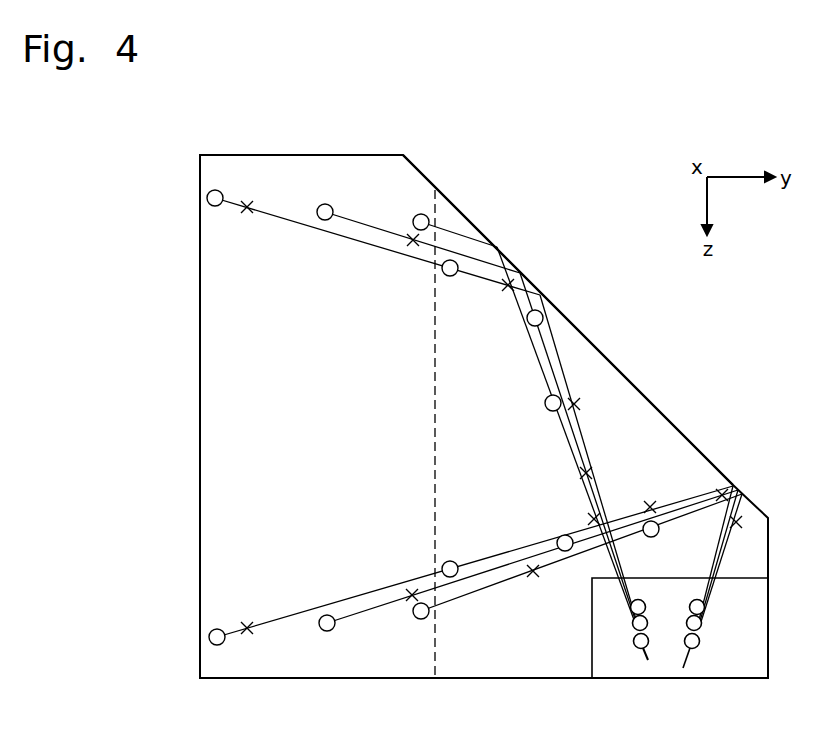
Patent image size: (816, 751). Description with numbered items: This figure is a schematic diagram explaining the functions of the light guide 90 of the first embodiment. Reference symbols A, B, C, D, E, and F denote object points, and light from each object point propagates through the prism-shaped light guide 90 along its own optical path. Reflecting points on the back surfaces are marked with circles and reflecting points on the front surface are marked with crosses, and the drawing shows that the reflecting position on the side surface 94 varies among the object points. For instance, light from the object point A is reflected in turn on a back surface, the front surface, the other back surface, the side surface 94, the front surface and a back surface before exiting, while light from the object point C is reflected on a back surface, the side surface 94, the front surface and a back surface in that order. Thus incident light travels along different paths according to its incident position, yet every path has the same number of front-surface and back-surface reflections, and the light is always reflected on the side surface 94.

The light guide 90 is at (566, 152).
The side surface 94 is at (638, 387).
The object point A is at (210, 192).
The object point B is at (325, 204).
The object point C is at (423, 214).
The object point D is at (212, 643).
The object point E is at (327, 632).
The object point F is at (427, 618).